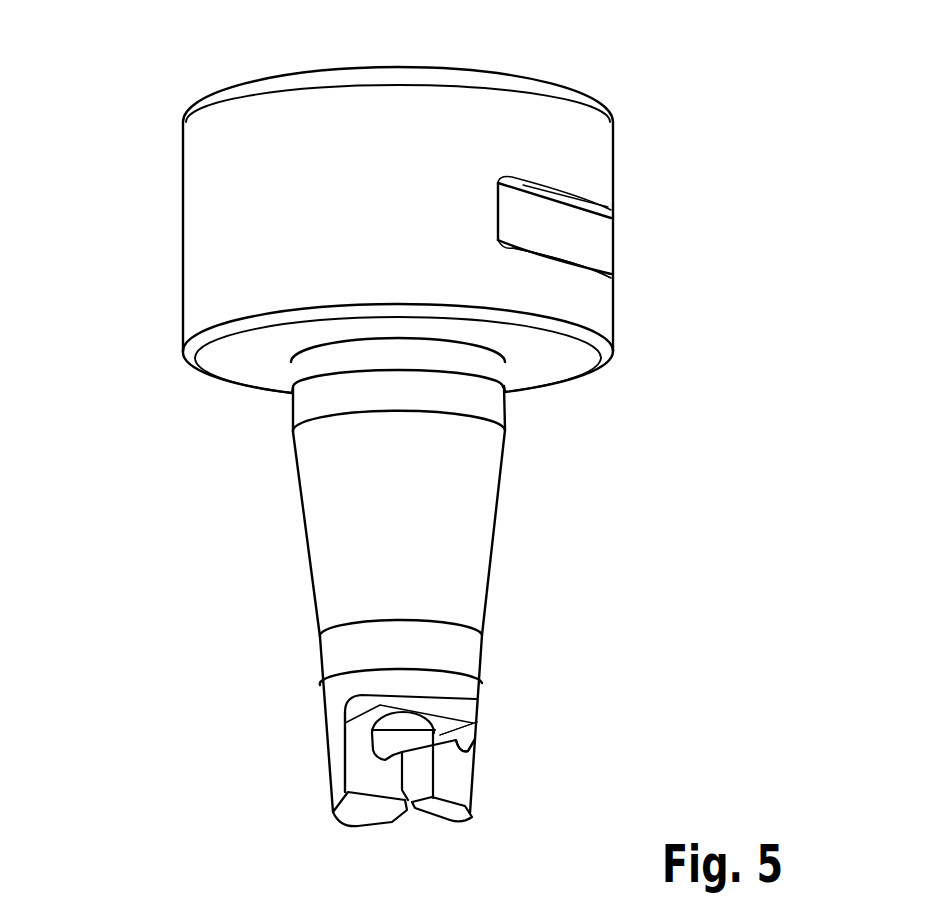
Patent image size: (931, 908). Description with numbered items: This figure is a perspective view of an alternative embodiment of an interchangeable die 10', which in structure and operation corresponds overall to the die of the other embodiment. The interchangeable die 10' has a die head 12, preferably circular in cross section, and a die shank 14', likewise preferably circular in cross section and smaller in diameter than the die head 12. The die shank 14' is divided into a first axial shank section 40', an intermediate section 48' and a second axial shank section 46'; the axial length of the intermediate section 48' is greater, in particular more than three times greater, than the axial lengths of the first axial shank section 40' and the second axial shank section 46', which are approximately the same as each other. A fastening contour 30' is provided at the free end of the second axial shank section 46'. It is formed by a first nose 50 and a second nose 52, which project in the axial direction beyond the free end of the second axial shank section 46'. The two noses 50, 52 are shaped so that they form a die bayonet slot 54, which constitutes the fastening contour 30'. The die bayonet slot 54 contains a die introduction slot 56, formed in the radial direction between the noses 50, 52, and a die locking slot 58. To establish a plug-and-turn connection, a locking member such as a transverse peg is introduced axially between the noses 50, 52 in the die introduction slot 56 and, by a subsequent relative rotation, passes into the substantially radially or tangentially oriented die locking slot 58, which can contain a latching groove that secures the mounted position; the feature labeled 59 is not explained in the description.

The interchangeable die 10' is at (406, 455).
The die head 12 is at (160, 194).
The die shank 14' is at (381, 620).
The first axial shank section 40' is at (451, 412).
The intermediate section 48' is at (451, 522).
The second axial shank section 46' is at (452, 652).
The fastening contour 30' is at (366, 790).
The first nose 50 is at (337, 760).
The second nose 52 is at (449, 786).
The die bayonet slot 54 is at (489, 697).
The die introduction slot 56 is at (376, 785).
The die locking slot 58 is at (468, 738).
The recess edge 59 is at (467, 765).